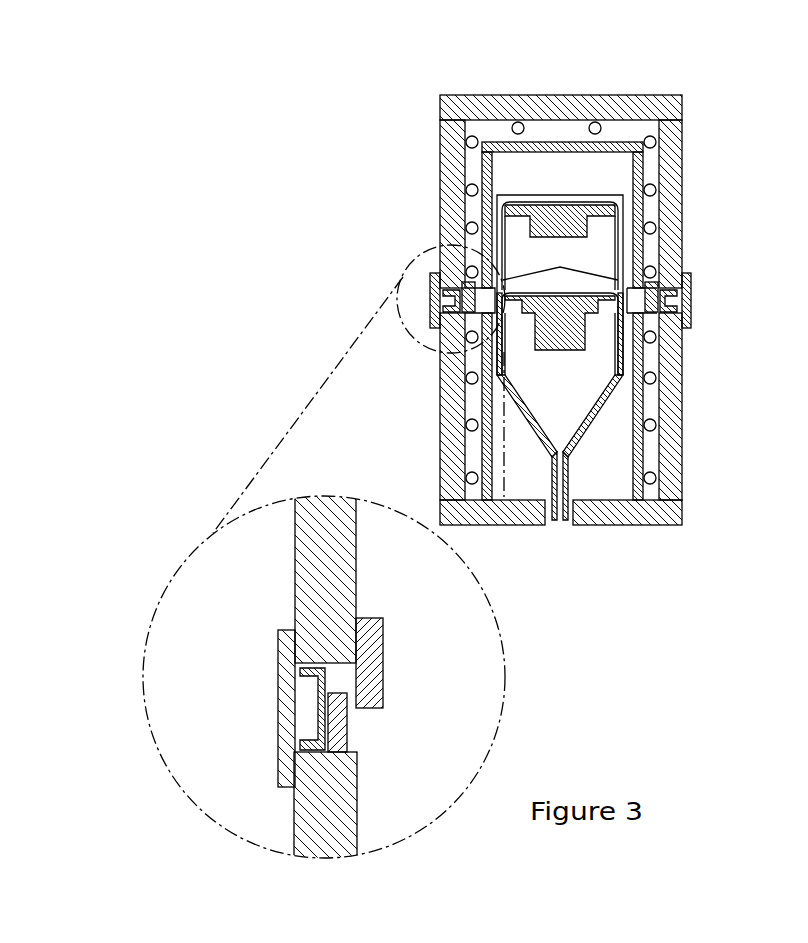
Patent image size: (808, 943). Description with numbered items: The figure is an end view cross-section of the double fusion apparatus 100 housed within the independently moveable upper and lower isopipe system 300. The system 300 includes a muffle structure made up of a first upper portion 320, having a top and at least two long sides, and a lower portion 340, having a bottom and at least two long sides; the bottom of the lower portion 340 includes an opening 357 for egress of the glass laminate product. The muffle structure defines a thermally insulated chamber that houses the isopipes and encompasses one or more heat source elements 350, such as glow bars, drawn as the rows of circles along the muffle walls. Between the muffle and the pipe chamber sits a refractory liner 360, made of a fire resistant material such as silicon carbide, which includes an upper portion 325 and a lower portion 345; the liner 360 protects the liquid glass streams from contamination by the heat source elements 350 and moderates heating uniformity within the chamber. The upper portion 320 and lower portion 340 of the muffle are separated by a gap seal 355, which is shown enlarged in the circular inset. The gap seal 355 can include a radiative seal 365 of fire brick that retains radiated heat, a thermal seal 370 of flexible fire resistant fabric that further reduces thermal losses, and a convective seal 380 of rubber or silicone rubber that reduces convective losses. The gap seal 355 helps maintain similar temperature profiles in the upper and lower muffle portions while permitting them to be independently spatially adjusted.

The independently moveable upper and lower isopipe system 300 is at (705, 78).
The double fusion apparatus 100 is at (566, 195).
The first upper portion of the muffle 320 is at (683, 191).
The upper portion of the refractory liner 325 is at (643, 250).
The lower portion of the muffle 340 is at (683, 425).
The lower portion of the refractory liner 345 is at (643, 462).
The heat source element 350 is at (512, 126).
The gap seal 355 is at (416, 256).
The opening 357 is at (545, 533).
The refractory liner 360 is at (643, 165).
The radiative seal 365 is at (347, 728).
The thermal seal 370 is at (307, 695).
The convective seal 380 is at (278, 750).